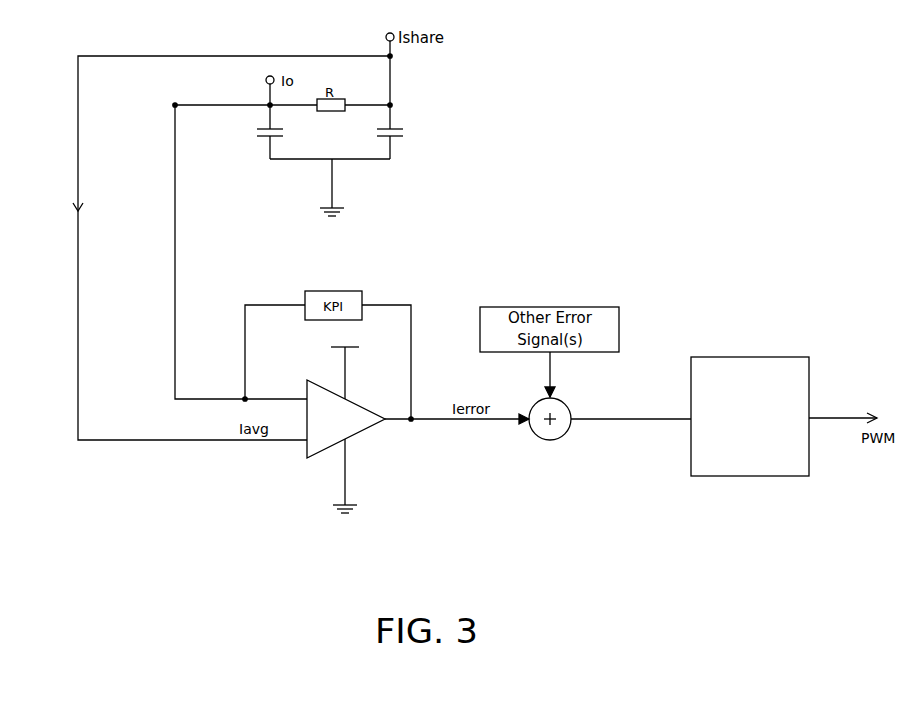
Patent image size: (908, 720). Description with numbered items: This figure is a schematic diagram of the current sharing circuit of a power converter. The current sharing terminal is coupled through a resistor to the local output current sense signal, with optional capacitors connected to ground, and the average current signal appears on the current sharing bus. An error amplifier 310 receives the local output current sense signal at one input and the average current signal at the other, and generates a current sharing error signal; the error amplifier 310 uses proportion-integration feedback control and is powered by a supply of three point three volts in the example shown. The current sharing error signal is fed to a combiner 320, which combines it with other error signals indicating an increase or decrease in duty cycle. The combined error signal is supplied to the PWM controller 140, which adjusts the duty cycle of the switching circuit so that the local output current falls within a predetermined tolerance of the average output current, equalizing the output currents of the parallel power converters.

The error amplifier 310 is at (352, 428).
The combiner 320 is at (557, 433).
The PWM controller 140 is at (751, 357).